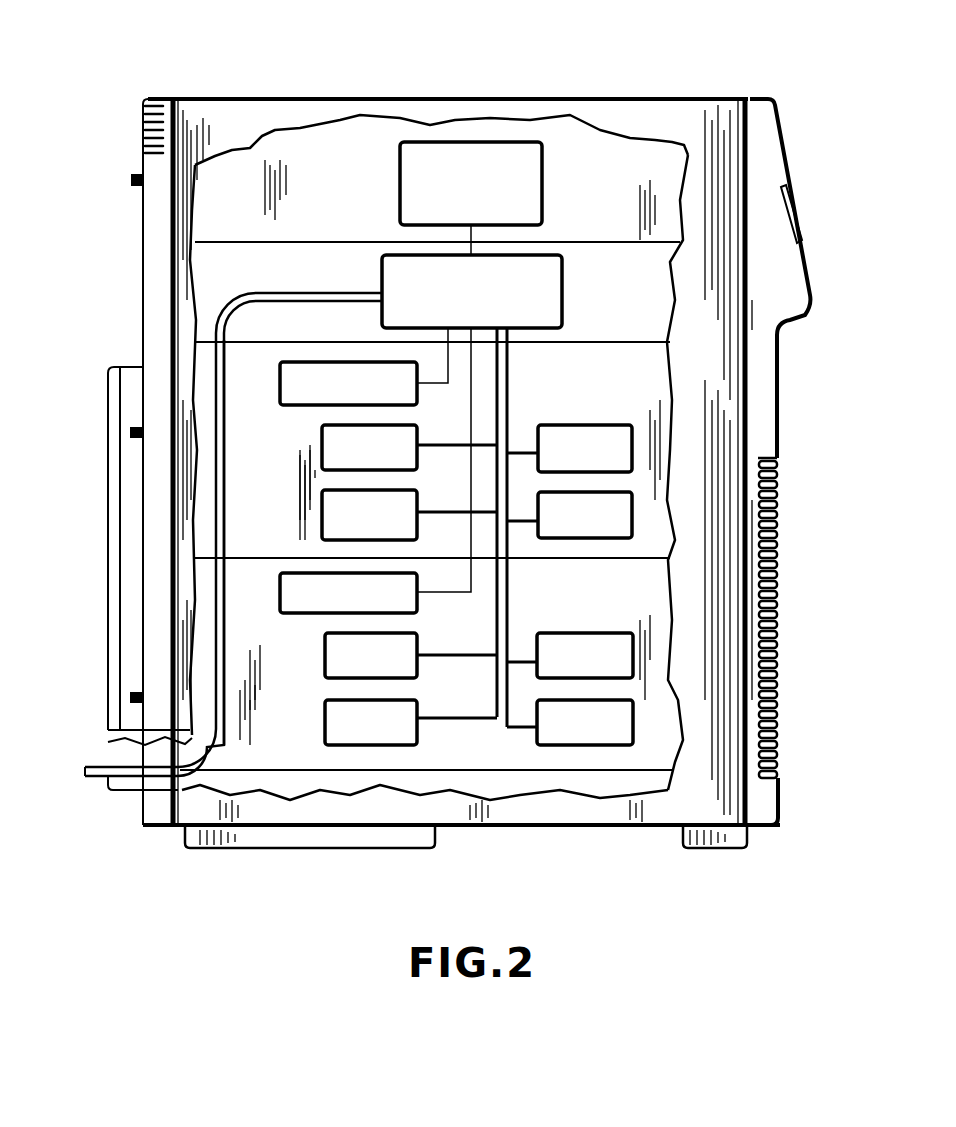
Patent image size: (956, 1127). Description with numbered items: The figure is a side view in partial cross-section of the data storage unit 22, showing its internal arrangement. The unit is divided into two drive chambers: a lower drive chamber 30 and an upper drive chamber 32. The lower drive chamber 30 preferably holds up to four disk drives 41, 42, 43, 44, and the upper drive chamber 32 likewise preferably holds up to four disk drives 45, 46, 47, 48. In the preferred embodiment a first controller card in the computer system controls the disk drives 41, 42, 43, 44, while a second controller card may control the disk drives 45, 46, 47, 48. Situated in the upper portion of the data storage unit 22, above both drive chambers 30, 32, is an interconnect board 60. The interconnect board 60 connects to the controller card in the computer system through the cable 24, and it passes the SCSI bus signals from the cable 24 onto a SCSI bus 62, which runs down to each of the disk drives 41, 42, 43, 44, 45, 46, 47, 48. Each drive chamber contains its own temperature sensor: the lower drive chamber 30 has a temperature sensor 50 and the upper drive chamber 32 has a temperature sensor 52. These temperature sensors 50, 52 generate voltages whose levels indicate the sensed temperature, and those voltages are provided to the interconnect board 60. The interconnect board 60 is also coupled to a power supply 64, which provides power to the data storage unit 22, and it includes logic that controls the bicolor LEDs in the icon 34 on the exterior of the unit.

The data storage unit 22 is at (435, 82).
The cable 24 is at (322, 286).
The lower drive chamber 30 is at (280, 670).
The upper drive chamber 32 is at (285, 485).
The icon 34 is at (805, 200).
The disk drive 41 is at (411, 655).
The disk drive 42 is at (570, 655).
The disk drive 43 is at (411, 722).
The disk drive 44 is at (570, 722).
The disk drive 45 is at (409, 447).
The disk drive 46 is at (569, 448).
The disk drive 47 is at (409, 515).
The disk drive 48 is at (569, 515).
The temperature sensor 50 is at (305, 616).
The temperature sensor 52 is at (308, 408).
The interconnect board 60 is at (572, 298).
The SCSI bus 62 is at (520, 390).
The power supply 64 is at (552, 190).